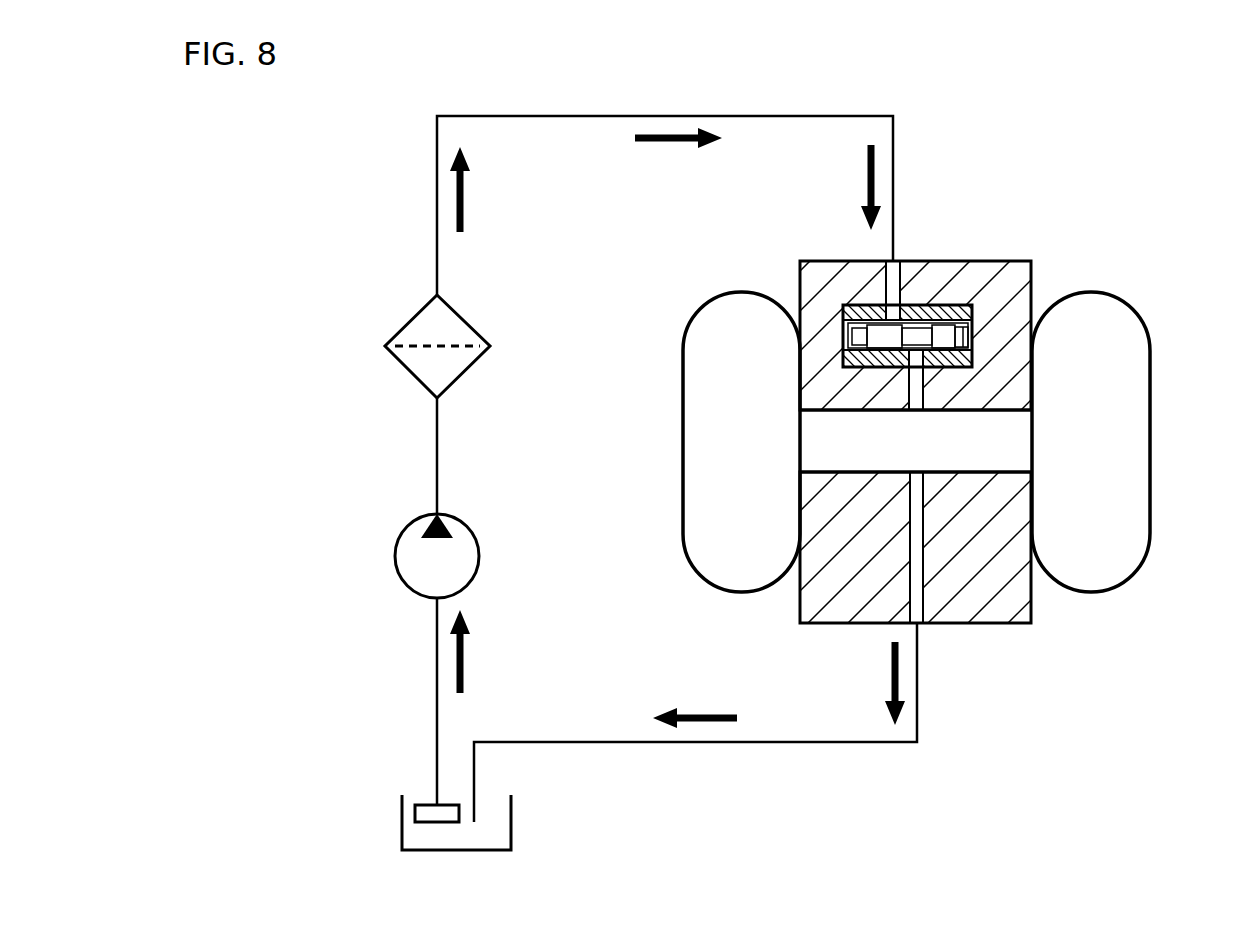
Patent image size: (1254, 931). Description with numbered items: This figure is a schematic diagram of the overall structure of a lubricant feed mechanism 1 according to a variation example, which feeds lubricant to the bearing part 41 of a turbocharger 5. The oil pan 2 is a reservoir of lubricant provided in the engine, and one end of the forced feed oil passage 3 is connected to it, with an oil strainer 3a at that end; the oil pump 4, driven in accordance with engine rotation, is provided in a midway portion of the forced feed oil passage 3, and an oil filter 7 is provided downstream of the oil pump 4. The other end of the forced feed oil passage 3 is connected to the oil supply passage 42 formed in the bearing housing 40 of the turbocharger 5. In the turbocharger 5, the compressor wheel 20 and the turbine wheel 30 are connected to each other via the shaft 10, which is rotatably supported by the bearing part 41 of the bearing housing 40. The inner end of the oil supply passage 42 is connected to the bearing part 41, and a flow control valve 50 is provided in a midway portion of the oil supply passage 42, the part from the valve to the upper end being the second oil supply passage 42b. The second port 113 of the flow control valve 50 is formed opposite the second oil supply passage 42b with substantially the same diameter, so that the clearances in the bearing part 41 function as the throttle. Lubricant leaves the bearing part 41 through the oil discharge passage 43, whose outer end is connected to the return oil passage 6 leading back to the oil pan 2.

The lubricant feed mechanism 1 is at (716, 444).
The oil pan 2 is at (401, 818).
The forced feed oil passage 3 is at (578, 115).
The oil strainer 3a is at (427, 803).
The oil pump 4 is at (395, 555).
The turbocharger 5 is at (1078, 197).
The return oil passage 6 is at (782, 742).
The oil filter 7 is at (412, 322).
The shaft 10 is at (930, 453).
The compressor wheel 20 is at (740, 291).
The turbine wheel 30 is at (1095, 291).
The bearing housing 40 is at (851, 434).
The bearing part 41 is at (987, 453).
The oil supply passage 42 is at (898, 277).
The second oil supply passage 42b is at (912, 392).
The oil discharge passage 43 is at (912, 612).
The flow control valve 50 is at (1013, 297).
The second port 113 is at (925, 370).